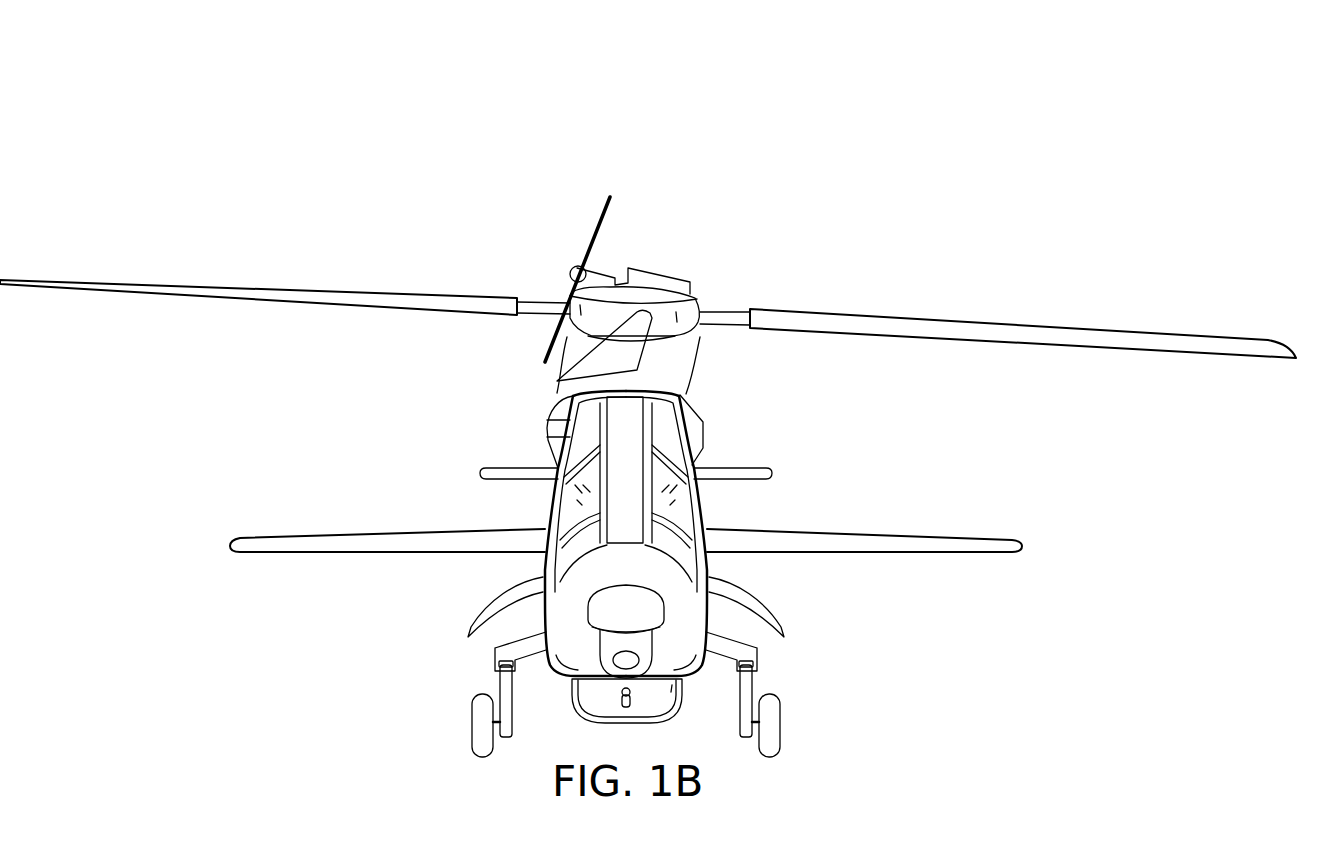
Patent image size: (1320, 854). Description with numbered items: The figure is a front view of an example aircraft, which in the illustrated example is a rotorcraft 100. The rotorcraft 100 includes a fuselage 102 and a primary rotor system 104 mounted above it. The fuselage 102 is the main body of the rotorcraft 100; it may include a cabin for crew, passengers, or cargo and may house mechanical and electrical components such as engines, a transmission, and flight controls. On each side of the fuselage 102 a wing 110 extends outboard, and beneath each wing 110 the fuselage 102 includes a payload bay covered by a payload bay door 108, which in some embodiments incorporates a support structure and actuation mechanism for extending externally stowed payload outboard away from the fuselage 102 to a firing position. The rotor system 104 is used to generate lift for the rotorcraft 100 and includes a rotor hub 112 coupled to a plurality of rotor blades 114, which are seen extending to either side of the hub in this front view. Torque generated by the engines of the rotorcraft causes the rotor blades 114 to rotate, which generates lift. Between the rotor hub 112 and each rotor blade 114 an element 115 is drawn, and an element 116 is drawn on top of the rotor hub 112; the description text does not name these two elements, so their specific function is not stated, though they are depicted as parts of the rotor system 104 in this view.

The rotorcraft 100 is at (257, 142).
The fuselage 102 is at (565, 410).
The primary rotor system 104 is at (702, 205).
The payload bay door 108 is at (560, 679).
The wing 110 is at (337, 535).
The rotor hub 112 is at (704, 300).
The rotor blades 114 is at (263, 290).
The blade grip 115 is at (542, 297).
The hub component 116 is at (641, 294).